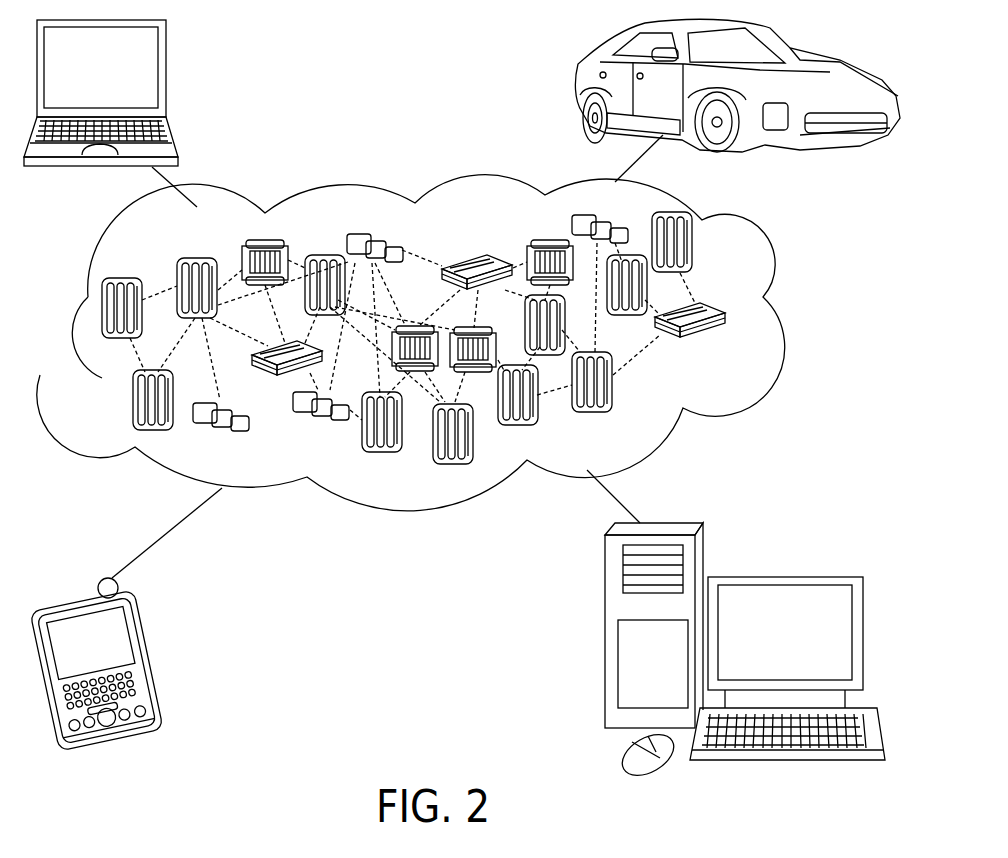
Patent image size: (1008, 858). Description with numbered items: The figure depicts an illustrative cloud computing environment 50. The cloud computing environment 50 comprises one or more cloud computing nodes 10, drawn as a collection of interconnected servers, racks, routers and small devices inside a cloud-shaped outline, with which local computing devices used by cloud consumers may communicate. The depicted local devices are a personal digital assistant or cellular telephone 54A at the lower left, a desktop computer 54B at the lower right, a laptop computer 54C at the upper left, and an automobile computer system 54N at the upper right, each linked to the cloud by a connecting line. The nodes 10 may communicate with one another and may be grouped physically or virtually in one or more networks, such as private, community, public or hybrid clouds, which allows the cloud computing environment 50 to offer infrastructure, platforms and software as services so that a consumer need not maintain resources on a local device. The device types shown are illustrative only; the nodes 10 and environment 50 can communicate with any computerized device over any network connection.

The cloud computing node 10 is at (805, 308).
The cloud computing environment 50 is at (438, 343).
The personal digital assistant or cellular telephone 54A is at (157, 661).
The desktop computer 54B is at (782, 575).
The laptop computer 54C is at (167, 76).
The automobile computer system 54N is at (575, 90).